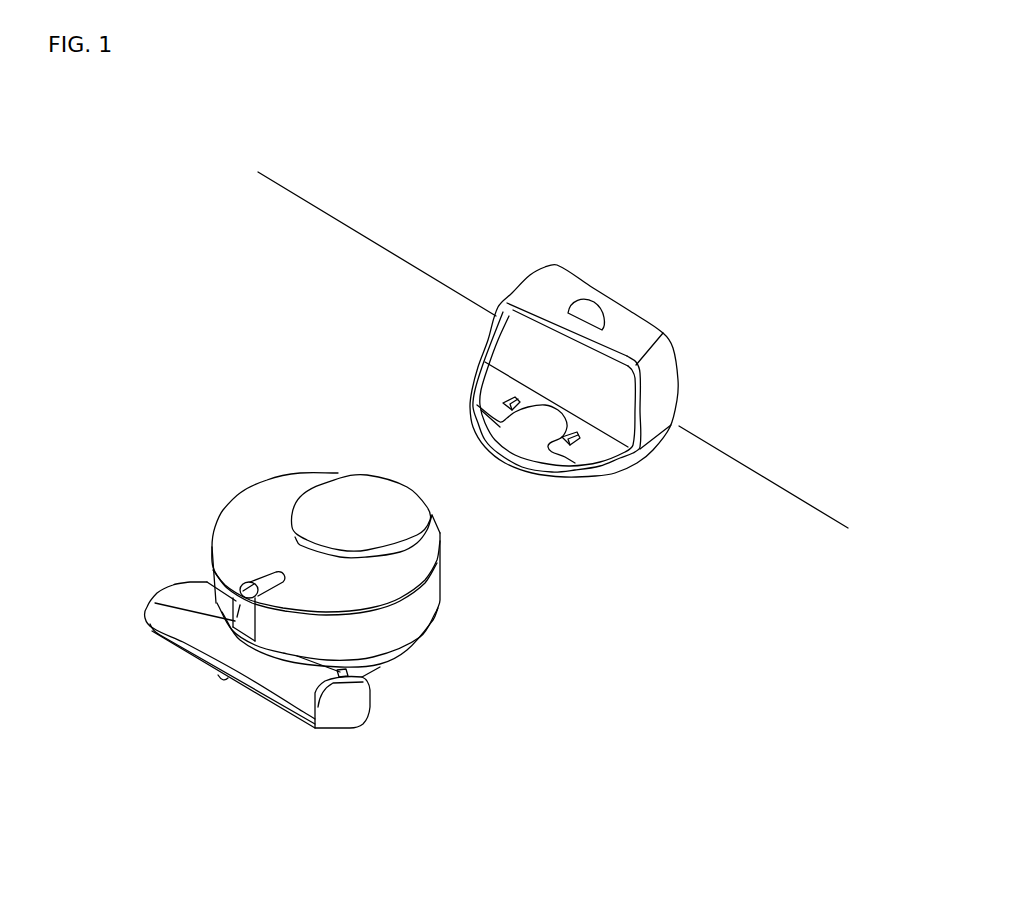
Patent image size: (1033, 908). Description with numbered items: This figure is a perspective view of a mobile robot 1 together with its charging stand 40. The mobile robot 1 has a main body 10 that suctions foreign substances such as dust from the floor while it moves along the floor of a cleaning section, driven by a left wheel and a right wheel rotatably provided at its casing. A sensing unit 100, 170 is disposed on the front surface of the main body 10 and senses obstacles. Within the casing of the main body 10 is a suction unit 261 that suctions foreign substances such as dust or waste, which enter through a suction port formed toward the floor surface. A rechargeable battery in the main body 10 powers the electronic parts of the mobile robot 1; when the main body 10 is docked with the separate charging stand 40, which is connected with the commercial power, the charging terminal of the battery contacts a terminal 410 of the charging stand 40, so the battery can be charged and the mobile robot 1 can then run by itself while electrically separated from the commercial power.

The mobile robot 1 is at (247, 517).
The main body 10 is at (275, 458).
The charging stand 40 is at (668, 393).
The sensing unit 100 is at (242, 603).
The sensing unit 170 is at (253, 588).
The suction unit 261 is at (342, 697).
The terminal 410 is at (515, 408).